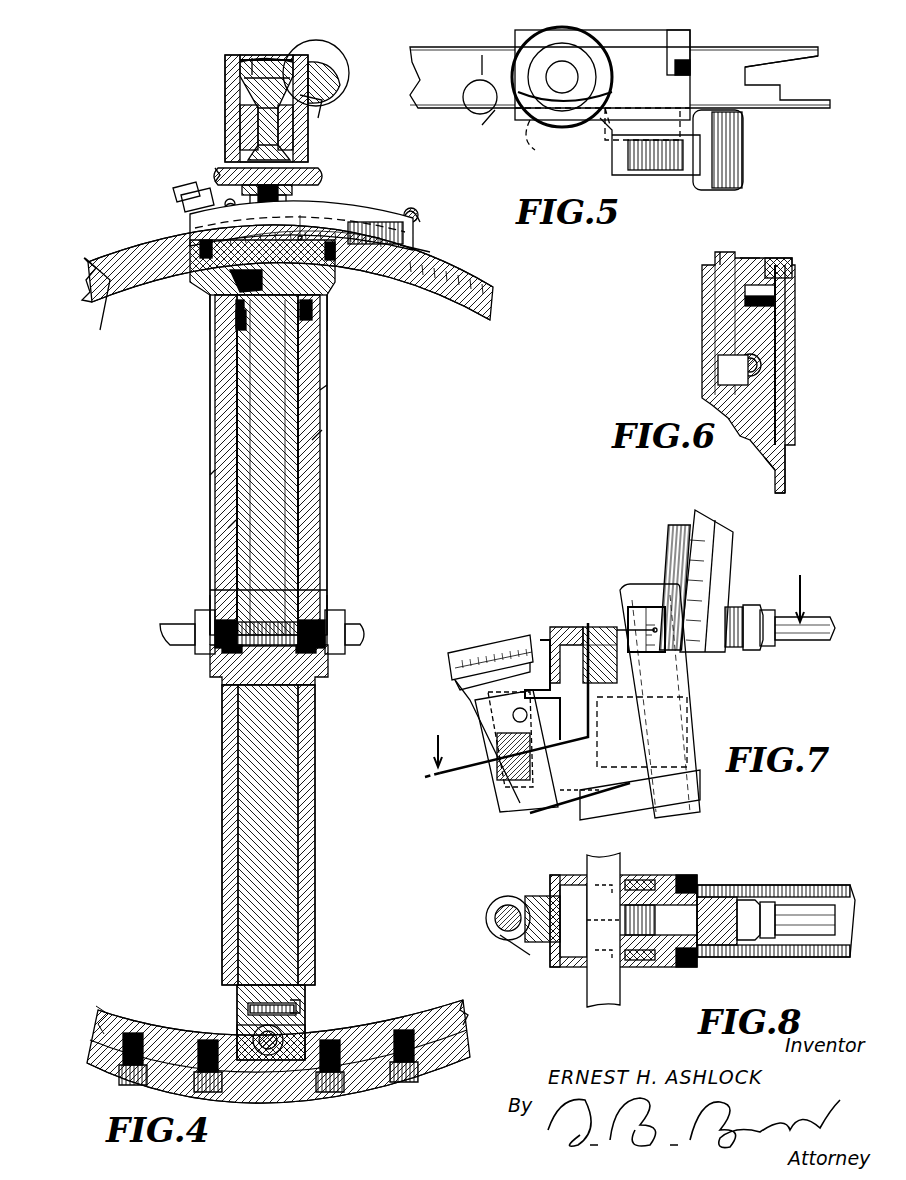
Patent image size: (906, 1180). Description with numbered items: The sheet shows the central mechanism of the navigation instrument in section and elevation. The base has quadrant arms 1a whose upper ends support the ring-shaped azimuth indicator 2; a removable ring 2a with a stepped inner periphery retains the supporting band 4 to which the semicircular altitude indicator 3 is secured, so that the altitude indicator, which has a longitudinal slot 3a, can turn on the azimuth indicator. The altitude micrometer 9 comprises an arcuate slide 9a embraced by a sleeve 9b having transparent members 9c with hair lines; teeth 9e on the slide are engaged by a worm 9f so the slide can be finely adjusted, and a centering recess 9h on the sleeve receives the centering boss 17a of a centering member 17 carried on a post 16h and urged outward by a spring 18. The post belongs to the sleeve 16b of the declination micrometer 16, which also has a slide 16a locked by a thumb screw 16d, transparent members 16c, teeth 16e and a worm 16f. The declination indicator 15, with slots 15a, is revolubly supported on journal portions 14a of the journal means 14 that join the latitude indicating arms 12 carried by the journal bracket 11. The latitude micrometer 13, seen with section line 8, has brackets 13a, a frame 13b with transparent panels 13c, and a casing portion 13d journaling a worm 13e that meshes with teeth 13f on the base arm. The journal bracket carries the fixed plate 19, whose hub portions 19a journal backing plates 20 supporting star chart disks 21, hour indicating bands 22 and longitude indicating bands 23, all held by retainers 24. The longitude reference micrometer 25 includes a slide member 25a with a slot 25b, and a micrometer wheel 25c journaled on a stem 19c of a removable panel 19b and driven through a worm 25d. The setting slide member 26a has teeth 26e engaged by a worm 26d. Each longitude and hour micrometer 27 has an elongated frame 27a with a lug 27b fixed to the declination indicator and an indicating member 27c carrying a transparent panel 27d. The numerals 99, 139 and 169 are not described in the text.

In FIG. 7, the quadrant arms 1a is at (615, 805).
In FIG. 8, the quadrant arms 1a is at (595, 975).
In FIG. 7, the azimuth indicator 2 is at (545, 655).
In FIG. 8, the azimuth indicator 2 is at (600, 1000).
In FIG. 7, the removable ring 2a is at (565, 637).
In FIG. 4, the altitude indicator 3 is at (262, 118).
In FIG. 4, the longitudinal slot 3a is at (262, 98).
In FIG. 7, the supporting band 4 is at (600, 627).
In FIG. 7, the section line 8 is at (619, 671).
In FIG. 4, the altitude micrometer 9 is at (215, 78).
In FIG. 4, the slide 9a is at (252, 58).
In FIG. 4, the sleeve 9b is at (230, 64).
In FIG. 4, the transparent members 9c is at (244, 138).
In FIG. 4, the teeth 9e is at (318, 118).
In FIG. 4, the worm 9f is at (344, 75).
In FIG. 4, the centering recess 9h is at (222, 178).
In FIG. 4, the ring 99 is at (330, 42).
In FIG. 4, the journal bracket 11 is at (272, 1104).
In FIG. 4, the latitude indicating arms 12 is at (130, 998).
In FIG. 8, the latitude indicating arms 12 is at (690, 875).
In FIG. 7, the latitude micrometer 13 is at (662, 735).
In FIG. 8, the latitude micrometer 13 is at (540, 945).
In FIG. 7, the bracket members 13a is at (635, 610).
In FIG. 8, the bracket members 13a is at (640, 880).
In FIG. 7, the frame 13b is at (540, 790).
In FIG. 8, the frame 13b is at (552, 885).
In FIG. 7, the transparent panels 13c is at (650, 620).
In FIG. 8, the transparent panels 13c is at (686, 966).
In FIG. 7, the casing portion 13d is at (495, 770).
In FIG. 8, the casing portion 13d is at (500, 925).
In FIG. 7, the worm 13e is at (500, 770).
In FIG. 8, the worm 13e is at (490, 910).
In FIG. 7, the teeth 13f is at (570, 790).
In FIG. 8, the teeth 13f is at (520, 950).
In FIG. 7, the scale plate 139 is at (492, 655).
In FIG. 4, the journal means 14 is at (158, 634).
In FIG. 7, the journal means 14 is at (765, 650).
In FIG. 8, the journal means 14 is at (800, 957).
In FIG. 7, the journal portions 14a is at (750, 605).
In FIG. 8, the journal portions 14a is at (745, 900).
In FIG. 4, the declination indicator 15 is at (480, 300).
In FIG. 5, the declination indicator 15 is at (810, 80).
In FIG. 7, the declination indicator 15 is at (715, 580).
In FIG. 4, the slots 15a is at (100, 300).
In FIG. 5, the slots 15a is at (770, 72).
In FIG. 4, the declination micrometer 16 is at (416, 210).
In FIG. 5, the declination micrometer 16 is at (601, 77).
In FIG. 4, the slide 16a is at (190, 212).
In FIG. 5, the slide 16a is at (485, 75).
In FIG. 4, the sleeve 16b is at (424, 192).
In FIG. 5, the sleeve 16b is at (640, 58).
In FIG. 5, the transparent members 16c is at (603, 134).
In FIG. 4, the thumb screw 16d is at (180, 188).
In FIG. 4, the teeth 16e is at (418, 250).
In FIG. 5, the teeth 16e is at (612, 170).
In FIG. 5, the worm 16f is at (660, 175).
In FIG. 4, the post 16h is at (286, 200).
In FIG. 5, the knob 169 is at (744, 150).
In FIG. 4, the centering member 17 is at (300, 168).
In FIG. 4, the centering boss 17a is at (290, 164).
In FIG. 4, the spring 18 is at (292, 190).
In FIG. 4, the fixed plate 19 is at (267, 566).
In FIG. 6, the fixed plate 19 is at (768, 460).
In FIG. 4, the hub portions 19a is at (318, 595).
In FIG. 6, the removable panel 19b is at (720, 375).
In FIG. 6, the stem 19c is at (775, 300).
In FIG. 4, the backing plates 20 is at (248, 575).
In FIG. 6, the backing plates 20 is at (778, 493).
In FIG. 4, the star chart disk 21 is at (238, 565).
In FIG. 6, the star chart disk 21 is at (790, 422).
In FIG. 4, the hour indicating band 22 is at (240, 350).
In FIG. 6, the hour indicating band 22 is at (793, 350).
In FIG. 4, the longitude indicating band 23 is at (245, 325).
In FIG. 6, the longitude indicating band 23 is at (790, 318).
In FIG. 4, the retainers 24 is at (215, 280).
In FIG. 6, the longitude reference micrometer 25 is at (732, 302).
In FIG. 6, the slide member 25a is at (790, 262).
In FIG. 6, the slot 25b is at (720, 252).
In FIG. 6, the micrometer wheel 25c is at (752, 258).
In FIG. 6, the worm 25d is at (762, 368).
In FIG. 4, the slide member 26a is at (295, 1010).
In FIG. 4, the worm 26d is at (300, 1012).
In FIG. 4, the teeth 26e is at (248, 1022).
In FIG. 4, the longitude and hour micrometer 27 is at (212, 372).
In FIG. 4, the elongated frame 27a is at (320, 400).
In FIG. 4, the lug 27b is at (202, 258).
In FIG. 4, the indicating member 27c is at (215, 592).
In FIG. 4, the transparent panel 27d is at (322, 430).